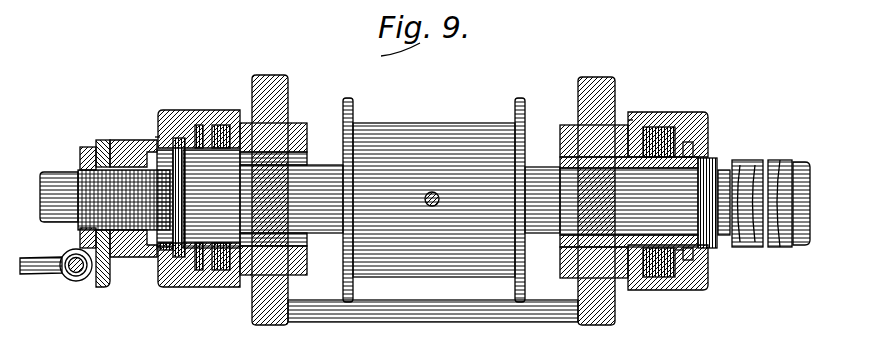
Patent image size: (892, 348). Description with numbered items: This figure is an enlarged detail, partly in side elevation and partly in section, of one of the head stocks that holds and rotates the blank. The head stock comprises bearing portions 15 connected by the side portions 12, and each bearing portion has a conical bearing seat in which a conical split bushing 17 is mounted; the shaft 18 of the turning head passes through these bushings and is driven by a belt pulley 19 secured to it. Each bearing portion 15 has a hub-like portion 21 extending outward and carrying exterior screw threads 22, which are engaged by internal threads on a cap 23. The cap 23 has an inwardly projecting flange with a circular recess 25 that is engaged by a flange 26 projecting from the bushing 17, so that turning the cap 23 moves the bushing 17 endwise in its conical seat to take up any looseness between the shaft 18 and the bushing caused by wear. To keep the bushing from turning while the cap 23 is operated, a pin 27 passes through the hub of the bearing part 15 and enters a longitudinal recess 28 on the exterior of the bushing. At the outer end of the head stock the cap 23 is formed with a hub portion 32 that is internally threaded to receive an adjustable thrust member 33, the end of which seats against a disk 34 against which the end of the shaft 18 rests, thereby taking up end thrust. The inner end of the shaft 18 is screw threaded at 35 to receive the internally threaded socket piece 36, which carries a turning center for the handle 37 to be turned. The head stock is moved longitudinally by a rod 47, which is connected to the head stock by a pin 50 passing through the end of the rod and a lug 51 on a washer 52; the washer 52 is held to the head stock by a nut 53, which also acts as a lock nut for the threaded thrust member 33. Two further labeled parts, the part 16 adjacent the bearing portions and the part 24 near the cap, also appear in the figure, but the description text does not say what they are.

The side portions 12 is at (550, 297).
The bearing portions 15 is at (279, 76).
The housing body 16 is at (308, 137).
The conical split bushing 17 is at (280, 242).
The shaft 18 is at (694, 214).
The belt pulley 19 is at (432, 130).
The hub-like portion 21 is at (225, 267).
The exterior screw threads 22 is at (247, 113).
The cap 23 is at (176, 138).
The collar 24 is at (188, 257).
The circular recess 25 is at (178, 142).
The flange 26 is at (167, 258).
The pin 27 is at (650, 127).
The longitudinal recess 28 is at (692, 146).
The hub portion 32 is at (128, 145).
The adjustable thrust member 33 is at (87, 173).
The disk 34 is at (157, 137).
The screw thread 35 is at (723, 244).
The socket piece 36 is at (757, 162).
The handle 37 is at (806, 244).
The rod 47 is at (33, 270).
The pin 50 is at (77, 277).
The lug 51 is at (92, 288).
The washer 52 is at (105, 140).
The nut 53 is at (80, 235).